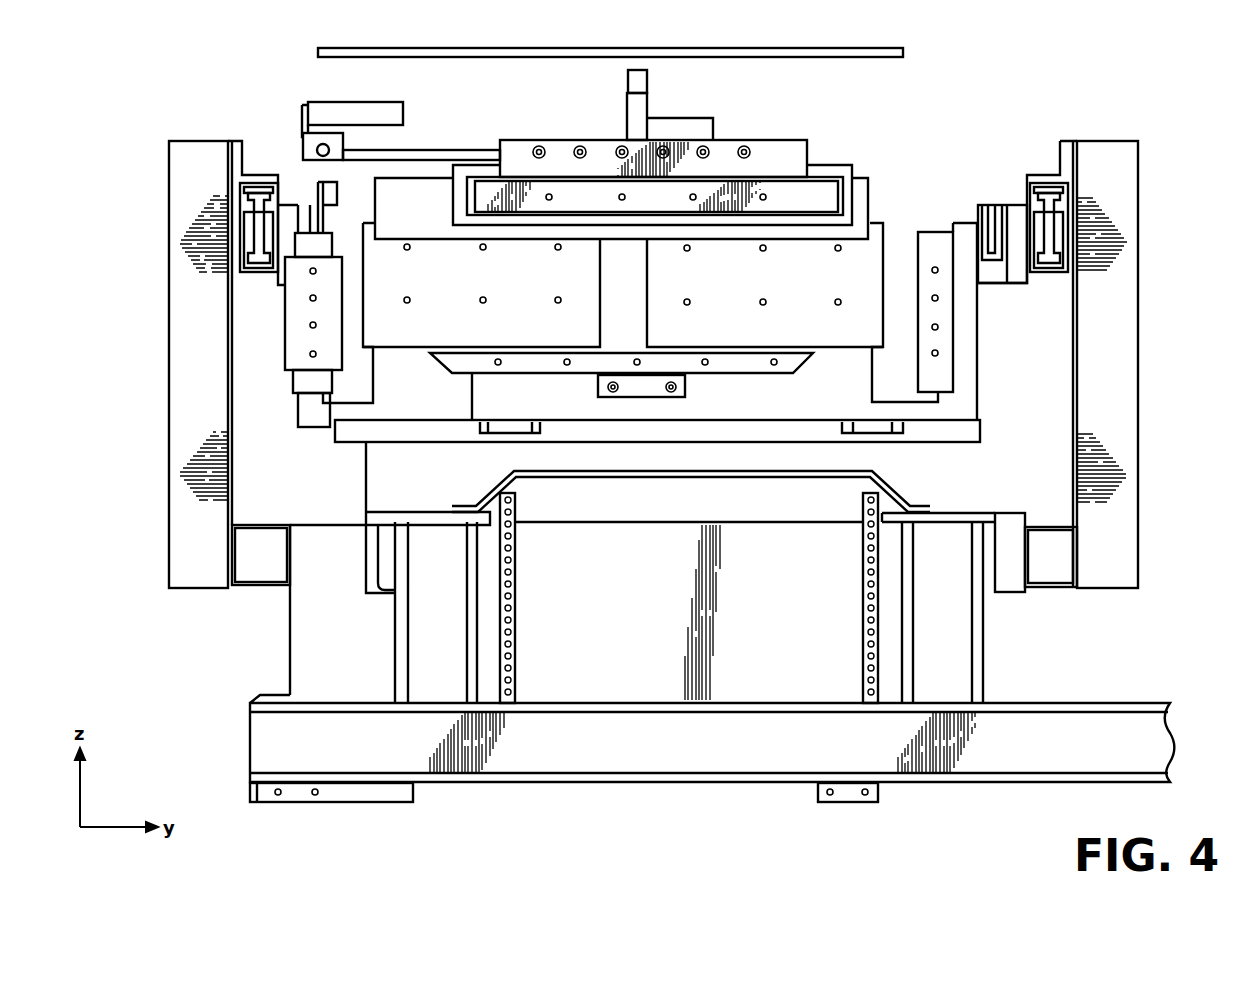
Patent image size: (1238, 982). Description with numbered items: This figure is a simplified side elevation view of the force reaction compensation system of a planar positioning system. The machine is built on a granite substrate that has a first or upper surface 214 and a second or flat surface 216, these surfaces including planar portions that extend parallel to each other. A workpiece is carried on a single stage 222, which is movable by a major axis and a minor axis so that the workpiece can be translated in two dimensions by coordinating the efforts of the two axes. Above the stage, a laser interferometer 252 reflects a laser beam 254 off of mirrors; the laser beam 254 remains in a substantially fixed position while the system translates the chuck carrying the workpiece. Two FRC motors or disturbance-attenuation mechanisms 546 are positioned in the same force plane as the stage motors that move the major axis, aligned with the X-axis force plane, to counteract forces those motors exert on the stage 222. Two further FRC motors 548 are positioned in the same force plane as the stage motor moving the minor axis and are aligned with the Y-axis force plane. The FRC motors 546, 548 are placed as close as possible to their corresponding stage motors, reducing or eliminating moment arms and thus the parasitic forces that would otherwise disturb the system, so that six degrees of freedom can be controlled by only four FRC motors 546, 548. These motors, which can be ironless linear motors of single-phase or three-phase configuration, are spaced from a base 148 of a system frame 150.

The base 148 is at (987, 675).
The system frame 150 is at (1118, 703).
The first or upper surface 214 is at (963, 223).
The second or flat surface 216 is at (980, 430).
The stage 222 is at (863, 168).
The laser interferometer 252 is at (303, 140).
The laser beam 254 is at (437, 148).
The FRC motors or disturbance-attenuation mechanisms 546 is at (270, 183).
The FRC motors or disturbance-attenuation mechanisms 548 is at (778, 185).